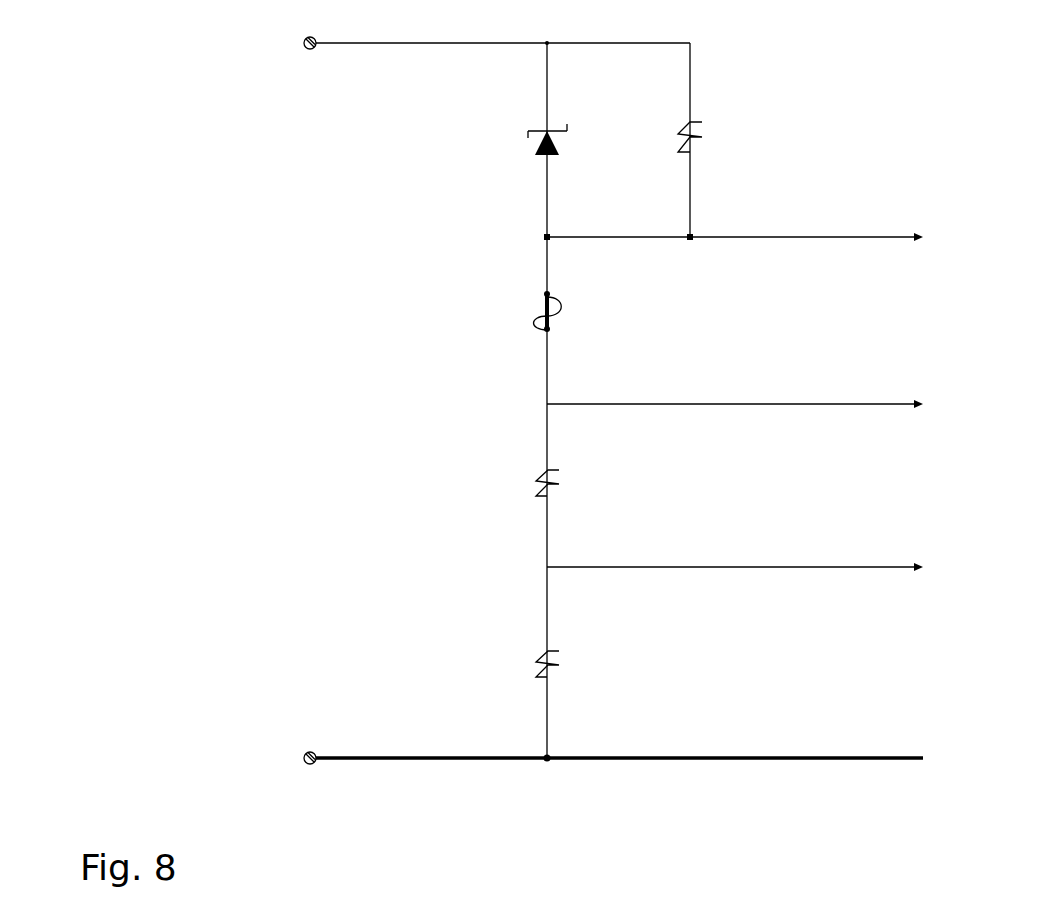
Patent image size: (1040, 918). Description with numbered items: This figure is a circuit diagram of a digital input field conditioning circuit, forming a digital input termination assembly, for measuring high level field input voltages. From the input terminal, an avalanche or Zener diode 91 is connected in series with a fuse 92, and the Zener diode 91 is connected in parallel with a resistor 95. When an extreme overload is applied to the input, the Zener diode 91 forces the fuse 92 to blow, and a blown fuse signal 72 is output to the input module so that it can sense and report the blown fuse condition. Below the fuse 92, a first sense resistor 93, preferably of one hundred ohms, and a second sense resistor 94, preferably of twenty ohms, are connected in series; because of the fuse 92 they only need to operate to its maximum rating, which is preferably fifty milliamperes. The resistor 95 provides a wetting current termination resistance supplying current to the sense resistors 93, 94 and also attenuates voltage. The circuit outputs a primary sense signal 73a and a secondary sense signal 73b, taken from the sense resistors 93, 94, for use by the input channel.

The Zener diode 91 is at (470, 151).
The fuse 92 is at (505, 312).
The first sense resistor 93 is at (505, 491).
The second sense resistor 94 is at (503, 670).
The resistor 95 is at (732, 135).
The blown fuse signal 72 is at (921, 250).
The secondary sense signal 73b is at (921, 417).
The primary sense signal 73a is at (921, 580).